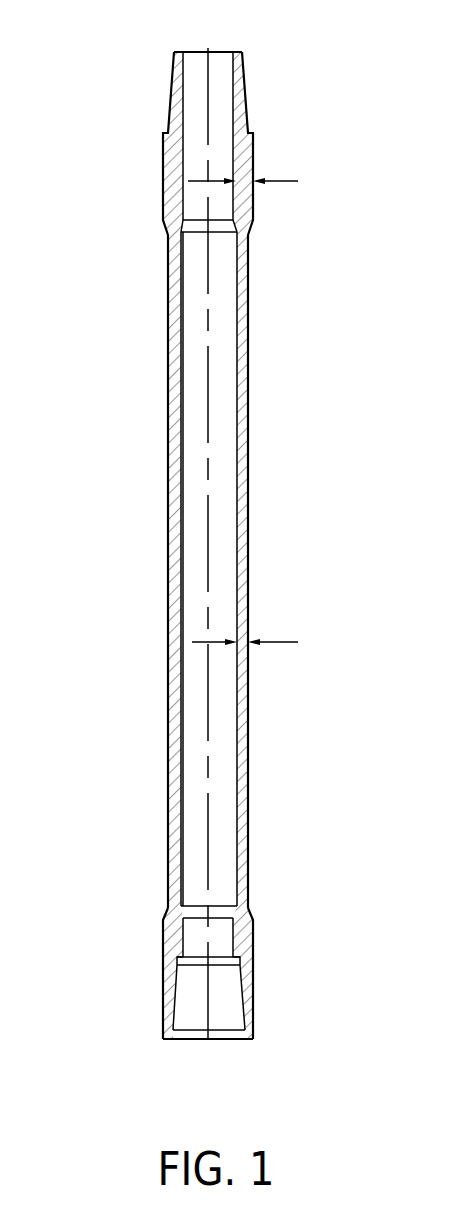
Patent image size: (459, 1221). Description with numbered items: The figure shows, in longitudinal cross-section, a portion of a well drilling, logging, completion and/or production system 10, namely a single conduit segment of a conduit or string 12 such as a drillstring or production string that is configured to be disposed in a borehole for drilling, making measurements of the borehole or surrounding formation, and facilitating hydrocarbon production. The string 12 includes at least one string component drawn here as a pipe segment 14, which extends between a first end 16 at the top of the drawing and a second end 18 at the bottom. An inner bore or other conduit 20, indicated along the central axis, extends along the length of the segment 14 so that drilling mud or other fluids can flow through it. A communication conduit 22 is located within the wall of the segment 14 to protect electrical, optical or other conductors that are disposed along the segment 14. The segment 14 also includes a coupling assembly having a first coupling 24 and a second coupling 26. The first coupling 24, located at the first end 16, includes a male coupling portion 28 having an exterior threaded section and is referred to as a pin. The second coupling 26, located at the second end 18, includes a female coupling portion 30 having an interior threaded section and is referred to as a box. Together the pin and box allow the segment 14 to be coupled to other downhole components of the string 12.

The well drilling, logging, completion and/or production system 10 is at (131, 162).
The conduit or string 12 is at (131, 538).
The pipe segment 14 is at (242, 345).
The first end 16 is at (220, 52).
The second end 18 is at (223, 1038).
The inner bore 20 is at (207, 562).
The communication conduit 22 is at (183, 723).
The first coupling 24 is at (242, 111).
The second coupling 26 is at (252, 979).
The male coupling portion 28 is at (176, 92).
The female coupling portion 30 is at (187, 1000).